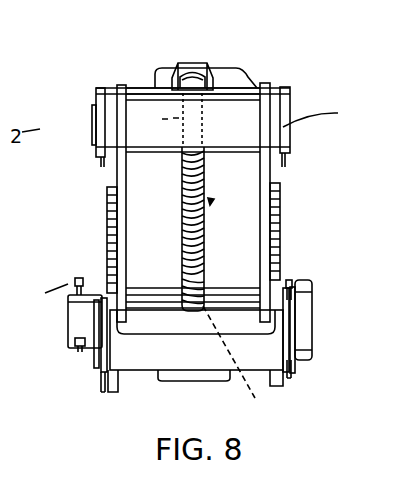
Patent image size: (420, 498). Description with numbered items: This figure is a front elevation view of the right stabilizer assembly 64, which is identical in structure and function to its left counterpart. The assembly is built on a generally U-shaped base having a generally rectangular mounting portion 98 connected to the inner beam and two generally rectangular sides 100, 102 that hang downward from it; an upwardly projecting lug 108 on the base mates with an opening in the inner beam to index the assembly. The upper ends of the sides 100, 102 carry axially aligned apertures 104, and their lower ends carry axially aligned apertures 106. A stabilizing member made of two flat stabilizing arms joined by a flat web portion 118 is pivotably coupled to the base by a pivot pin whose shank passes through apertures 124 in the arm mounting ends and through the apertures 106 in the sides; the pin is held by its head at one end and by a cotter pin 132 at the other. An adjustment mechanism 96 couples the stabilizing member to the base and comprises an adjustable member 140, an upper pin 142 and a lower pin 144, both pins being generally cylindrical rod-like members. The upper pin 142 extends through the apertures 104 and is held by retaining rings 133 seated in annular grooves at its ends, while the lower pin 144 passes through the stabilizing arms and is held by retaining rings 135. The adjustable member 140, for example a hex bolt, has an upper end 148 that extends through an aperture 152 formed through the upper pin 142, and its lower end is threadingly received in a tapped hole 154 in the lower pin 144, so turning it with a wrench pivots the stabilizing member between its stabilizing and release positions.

The right stabilizer assembly 64 is at (393, 387).
The adjustment mechanism 96 is at (210, 200).
The mounting portion 98 is at (238, 83).
The side 100 is at (272, 291).
The side 102 is at (113, 180).
The apertures 104 is at (108, 88).
The apertures 106 is at (132, 292).
The lug 108 is at (226, 66).
The web portion 118 is at (143, 365).
The apertures 124 is at (103, 295).
The cotter pin 132 is at (73, 327).
The retaining rings 133 is at (100, 115).
The retaining rings 135 is at (93, 352).
The adjustable member 140 is at (182, 176).
The upper pin 142 is at (245, 115).
The lower pin 144 is at (148, 300).
The upper end 148 is at (190, 68).
The aperture 152 is at (154, 121).
The tapped hole 154 is at (247, 364).